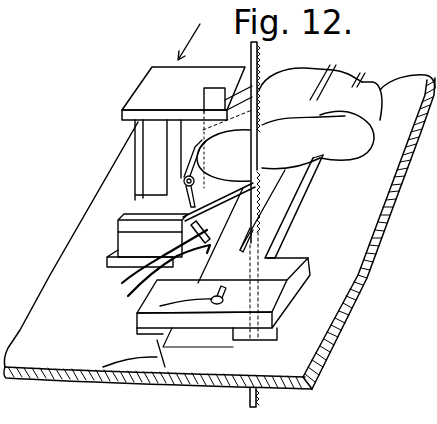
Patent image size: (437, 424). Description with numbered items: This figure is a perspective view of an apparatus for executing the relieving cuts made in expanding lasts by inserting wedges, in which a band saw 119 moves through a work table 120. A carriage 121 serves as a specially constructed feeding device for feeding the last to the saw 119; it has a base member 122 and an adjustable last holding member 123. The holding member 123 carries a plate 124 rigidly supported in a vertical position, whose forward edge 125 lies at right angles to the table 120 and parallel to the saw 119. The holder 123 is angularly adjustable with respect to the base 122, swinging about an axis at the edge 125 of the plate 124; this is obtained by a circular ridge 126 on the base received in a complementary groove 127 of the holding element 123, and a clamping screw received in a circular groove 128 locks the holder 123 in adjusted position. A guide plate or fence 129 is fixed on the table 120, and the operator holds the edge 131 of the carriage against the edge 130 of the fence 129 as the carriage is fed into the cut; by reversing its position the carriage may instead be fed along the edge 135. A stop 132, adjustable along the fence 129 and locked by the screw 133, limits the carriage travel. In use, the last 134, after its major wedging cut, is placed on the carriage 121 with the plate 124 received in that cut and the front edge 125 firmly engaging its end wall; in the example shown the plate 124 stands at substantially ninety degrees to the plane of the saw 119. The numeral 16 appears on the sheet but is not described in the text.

The cutting machine 16 is at (114, 1).
The saw 119 is at (260, 65).
The work table 120 is at (347, 233).
The carriage 121 is at (145, 173).
The base member 122 is at (125, 247).
The last holding member 123 is at (137, 212).
The plate 124 is at (214, 88).
The forward edge of the plate 125 is at (260, 77).
The circular ridge 126 is at (150, 273).
The complementary groove 127 is at (117, 222).
The circular groove 128 is at (183, 178).
The guide plate or fence 129 is at (287, 202).
The edge of the fence 130 is at (98, 378).
The edge of the carriage 131 is at (145, 297).
The stop 132 is at (270, 300).
The screw 133 is at (143, 313).
The last 134 is at (370, 93).
The edge of the fence 135 is at (303, 183).